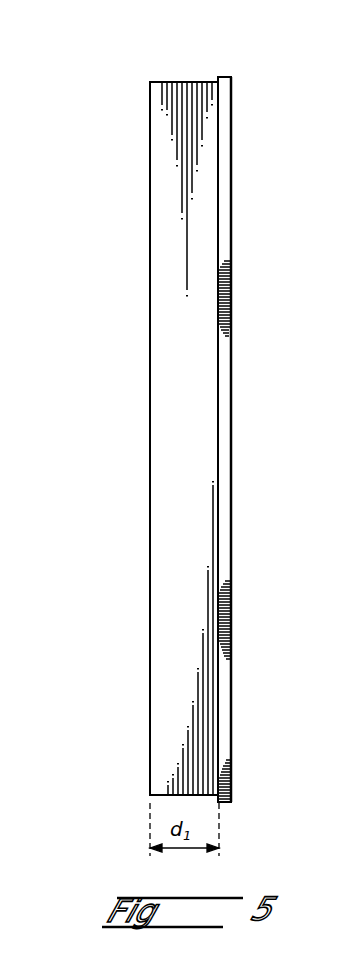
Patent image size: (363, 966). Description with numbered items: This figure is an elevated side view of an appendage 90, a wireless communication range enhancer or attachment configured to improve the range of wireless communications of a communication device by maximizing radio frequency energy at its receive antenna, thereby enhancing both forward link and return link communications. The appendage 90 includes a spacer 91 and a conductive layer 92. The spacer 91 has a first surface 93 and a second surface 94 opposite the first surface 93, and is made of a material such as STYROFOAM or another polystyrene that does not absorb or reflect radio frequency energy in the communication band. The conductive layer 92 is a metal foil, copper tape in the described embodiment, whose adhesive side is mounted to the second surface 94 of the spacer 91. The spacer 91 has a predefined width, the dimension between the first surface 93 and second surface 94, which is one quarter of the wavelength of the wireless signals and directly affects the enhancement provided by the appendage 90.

The appendage 90 is at (100, 333).
The spacer 91 is at (175, 82).
The conductive layer 92 is at (232, 128).
The first surface 93 is at (150, 230).
The second surface 94 is at (218, 222).